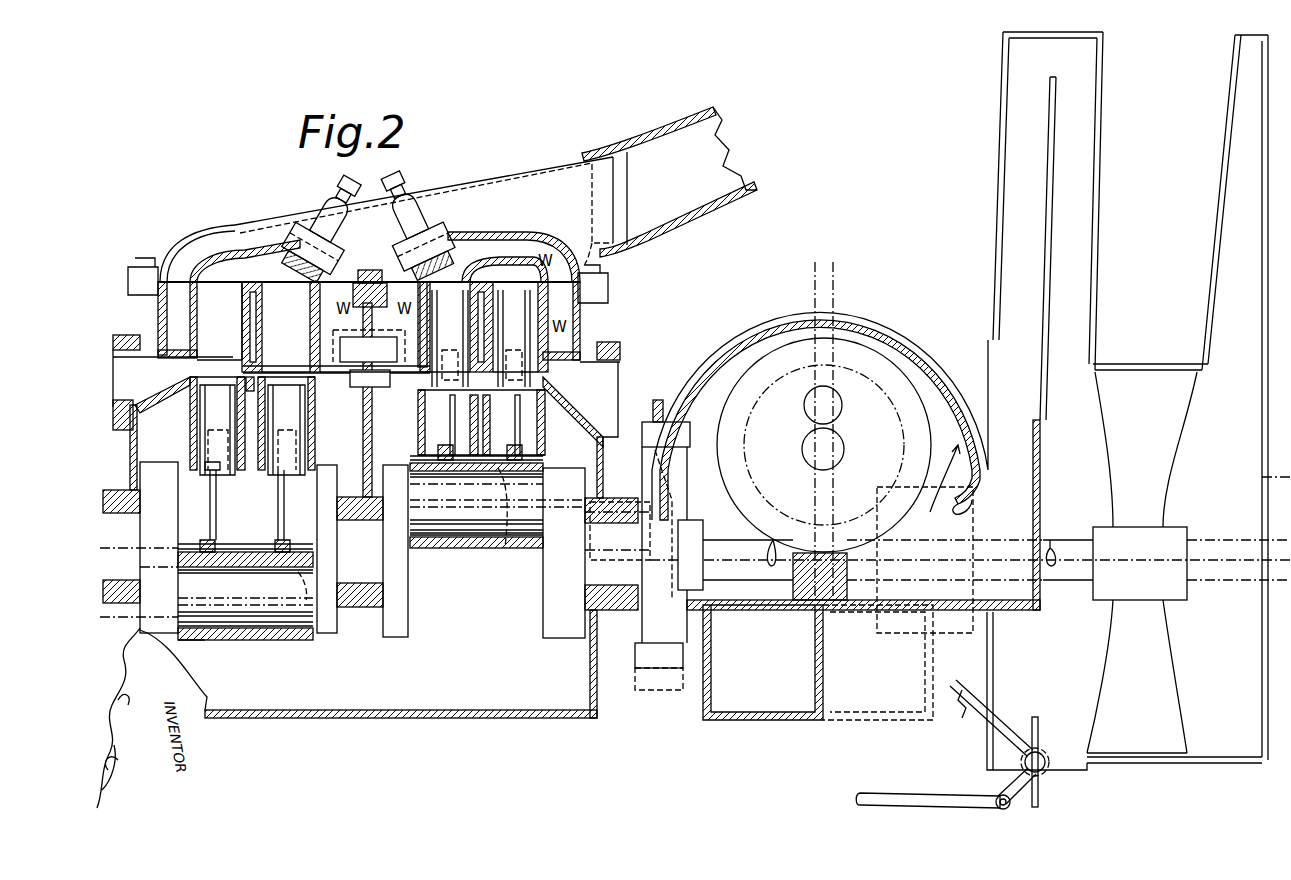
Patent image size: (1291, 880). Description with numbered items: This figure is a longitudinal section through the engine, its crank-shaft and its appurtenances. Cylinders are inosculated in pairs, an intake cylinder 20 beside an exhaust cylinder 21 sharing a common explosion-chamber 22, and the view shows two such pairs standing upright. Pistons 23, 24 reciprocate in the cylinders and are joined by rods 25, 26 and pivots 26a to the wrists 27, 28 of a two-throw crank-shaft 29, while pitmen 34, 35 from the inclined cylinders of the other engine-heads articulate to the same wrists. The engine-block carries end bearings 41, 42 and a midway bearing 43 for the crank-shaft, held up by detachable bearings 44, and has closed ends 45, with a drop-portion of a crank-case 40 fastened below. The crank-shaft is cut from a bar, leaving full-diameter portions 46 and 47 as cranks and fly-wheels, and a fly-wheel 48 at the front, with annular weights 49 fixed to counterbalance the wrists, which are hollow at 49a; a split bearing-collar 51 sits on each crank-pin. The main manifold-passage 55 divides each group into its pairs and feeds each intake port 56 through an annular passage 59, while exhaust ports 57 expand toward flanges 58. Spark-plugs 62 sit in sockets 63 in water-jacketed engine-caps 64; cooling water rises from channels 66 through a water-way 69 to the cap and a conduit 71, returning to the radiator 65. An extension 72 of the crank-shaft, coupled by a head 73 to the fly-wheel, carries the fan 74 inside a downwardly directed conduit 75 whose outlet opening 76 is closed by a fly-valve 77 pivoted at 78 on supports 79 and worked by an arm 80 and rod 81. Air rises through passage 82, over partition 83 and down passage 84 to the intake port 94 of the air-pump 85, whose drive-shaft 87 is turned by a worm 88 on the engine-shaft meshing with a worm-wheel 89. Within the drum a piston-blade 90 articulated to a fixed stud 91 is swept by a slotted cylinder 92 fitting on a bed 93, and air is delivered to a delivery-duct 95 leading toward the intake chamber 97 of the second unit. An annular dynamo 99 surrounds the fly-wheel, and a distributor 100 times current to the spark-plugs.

The intake cylinder 20 is at (343, 353).
The exhaust cylinder 21 is at (351, 353).
The common explosion-chamber 22 is at (366, 318).
The piston 23 is at (375, 378).
The piston 24 is at (369, 378).
The rod 25 is at (285, 652).
The rod 26 is at (212, 650).
The pivot 26a is at (208, 482).
The crank-wrist 27 is at (245, 596).
The crank-wrist 28 is at (497, 505).
The crank-shaft 29 is at (375, 559).
The pitman 34 is at (237, 552).
The pitman 35 is at (205, 552).
The crank-case 40 is at (378, 718).
The end bearing 41 is at (121, 493).
The end bearing 42 is at (632, 500).
The midway bearing 43 is at (370, 497).
The detachable bearing 44 is at (130, 606).
The closed end 45 is at (130, 450).
The full-diameter portion 46 is at (362, 550).
The full-diameter portion 47 is at (362, 551).
The fly-wheel 48 is at (637, 635).
The annular weight 49 is at (687, 655).
The hollow 49a is at (407, 534).
The split bearing-collar 51 is at (308, 640).
The main manifold-passage 55 is at (375, 356).
The intake port 56 is at (275, 368).
The exhaust port 57 is at (205, 368).
The flange 58 is at (114, 344).
The annular passage 59 is at (267, 386).
The spark-plug 62 is at (336, 230).
The socket 63 is at (443, 228).
The engine-cap 64 is at (192, 245).
The radiator 65 is at (1262, 342).
The interior channel 66 is at (372, 505).
The water-way 69 is at (369, 346).
The conduit 71 is at (484, 188).
The shaft extension 72 is at (668, 142).
The head 73 is at (700, 524).
The water-cooling fan 74 is at (1142, 562).
The downwardly directed conduit 75 is at (1216, 210).
The outlet opening 76 is at (1086, 770).
The fly-valve 77 is at (1040, 802).
The pivot 78 is at (1049, 762).
The support 79 is at (948, 738).
The arm 80 is at (1012, 786).
The rod 81 is at (962, 797).
The passage 82 is at (1135, 201).
The partition 83 is at (1050, 257).
The passage 84 is at (1048, 186).
The air-pump 85 is at (888, 262).
The drive-shaft 87 is at (845, 451).
The worm 88 is at (830, 610).
The worm-wheel 89 is at (905, 422).
The piston-blade 90 is at (838, 306).
The fixed stud 91 is at (842, 406).
The cylinder 92 is at (885, 372).
The bed 93 is at (848, 572).
The intake port 94 is at (972, 516).
The delivery-duct 95 is at (763, 662).
The intake chamber 97 is at (932, 680).
The dynamo 99 is at (657, 690).
The distributor 100 is at (951, 478).